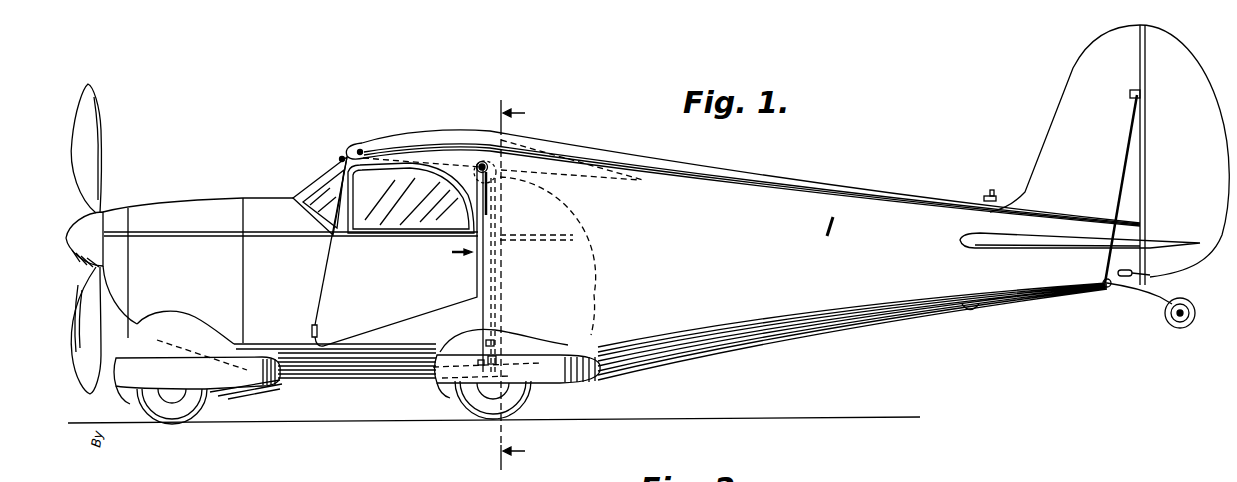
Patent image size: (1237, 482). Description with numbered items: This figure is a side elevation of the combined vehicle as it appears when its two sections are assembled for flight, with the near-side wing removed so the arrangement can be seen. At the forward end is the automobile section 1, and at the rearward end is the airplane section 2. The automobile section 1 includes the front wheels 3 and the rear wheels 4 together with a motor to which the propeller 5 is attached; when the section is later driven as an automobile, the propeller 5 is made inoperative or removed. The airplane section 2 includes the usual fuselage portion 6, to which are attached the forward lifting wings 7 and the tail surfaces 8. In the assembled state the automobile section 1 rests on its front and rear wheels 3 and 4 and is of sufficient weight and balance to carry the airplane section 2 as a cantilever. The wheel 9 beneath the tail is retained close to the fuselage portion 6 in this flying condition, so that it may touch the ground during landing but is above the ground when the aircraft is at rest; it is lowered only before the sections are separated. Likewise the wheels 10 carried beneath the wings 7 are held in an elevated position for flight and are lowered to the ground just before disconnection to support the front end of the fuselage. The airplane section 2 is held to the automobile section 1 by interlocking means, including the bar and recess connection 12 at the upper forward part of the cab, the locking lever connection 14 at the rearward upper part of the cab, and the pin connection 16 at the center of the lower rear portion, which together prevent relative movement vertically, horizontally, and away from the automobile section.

The automobile section 1 is at (233, 192).
The airplane section 2 is at (823, 180).
The front wheels 3 is at (172, 414).
The rear wheels 4 is at (478, 414).
The propeller 5 is at (100, 144).
The fuselage portion 6 is at (914, 195).
The forward lifting wings 7 is at (346, 146).
The tail surfaces 8 is at (1051, 128).
The wheel 9 is at (1179, 328).
The wheels 10 is at (510, 282).
The bar and recess connection 12 is at (337, 159).
The locking lever connection 14 is at (479, 162).
The pin connection 16 is at (498, 355).